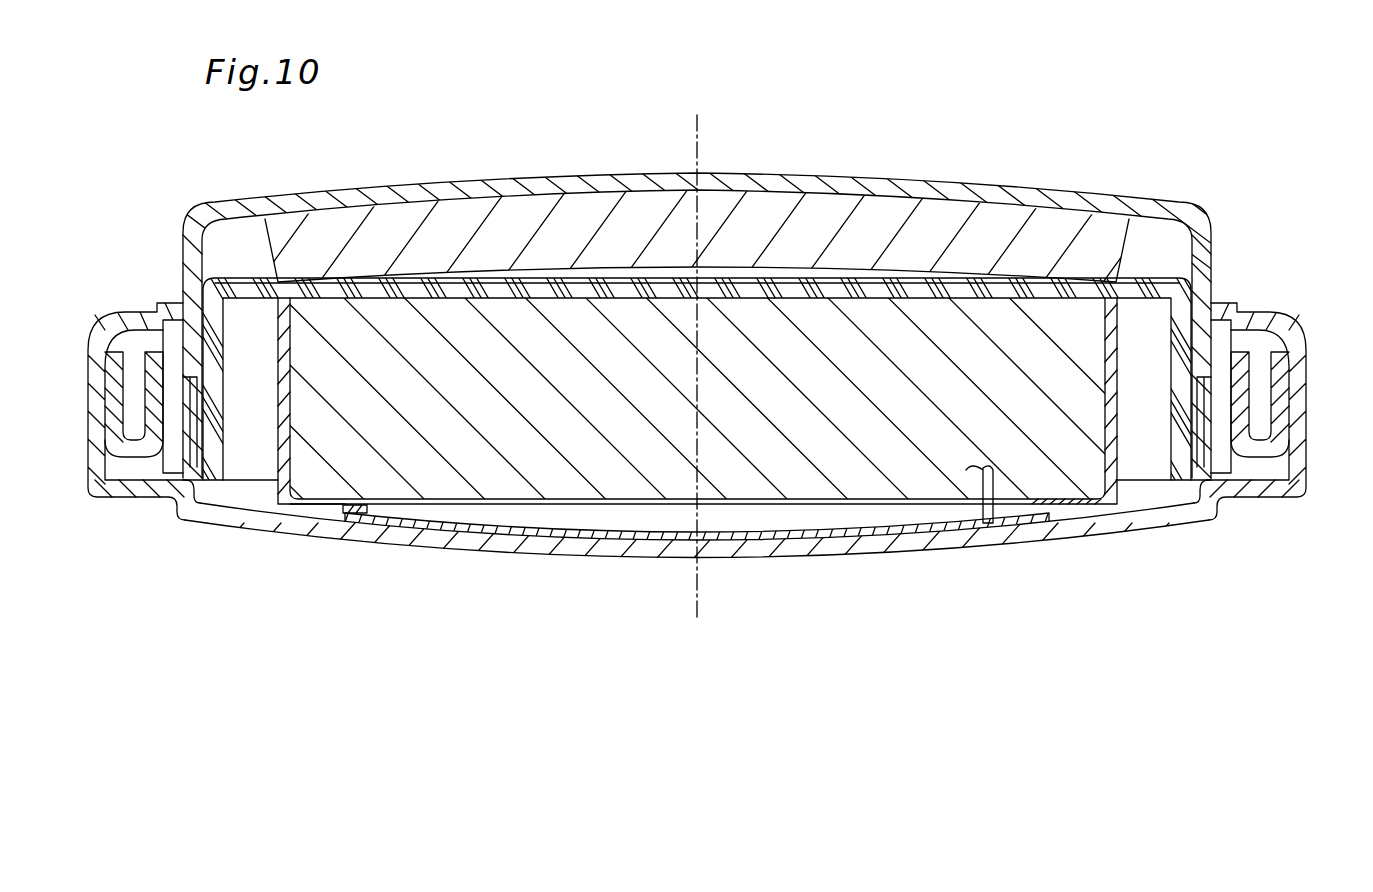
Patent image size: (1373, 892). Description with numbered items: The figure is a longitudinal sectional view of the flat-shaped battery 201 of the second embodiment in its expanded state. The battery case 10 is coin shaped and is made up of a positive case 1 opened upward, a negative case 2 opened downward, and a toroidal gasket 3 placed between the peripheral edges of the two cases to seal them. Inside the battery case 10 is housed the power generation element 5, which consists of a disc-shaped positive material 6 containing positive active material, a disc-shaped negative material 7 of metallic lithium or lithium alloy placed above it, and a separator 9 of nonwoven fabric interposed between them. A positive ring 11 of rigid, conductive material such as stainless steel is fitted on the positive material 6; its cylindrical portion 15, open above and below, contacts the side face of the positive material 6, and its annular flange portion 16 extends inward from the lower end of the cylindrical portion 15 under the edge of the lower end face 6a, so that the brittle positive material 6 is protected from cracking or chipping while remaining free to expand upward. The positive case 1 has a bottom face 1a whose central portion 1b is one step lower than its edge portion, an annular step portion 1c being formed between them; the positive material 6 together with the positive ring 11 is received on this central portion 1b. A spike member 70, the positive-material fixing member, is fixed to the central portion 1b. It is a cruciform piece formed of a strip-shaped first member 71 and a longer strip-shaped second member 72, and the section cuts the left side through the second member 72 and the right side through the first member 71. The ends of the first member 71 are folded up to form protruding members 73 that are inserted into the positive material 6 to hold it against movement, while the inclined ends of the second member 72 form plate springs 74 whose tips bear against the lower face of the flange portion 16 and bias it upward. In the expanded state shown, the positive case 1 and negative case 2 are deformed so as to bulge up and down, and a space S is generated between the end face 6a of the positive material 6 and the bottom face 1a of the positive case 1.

The positive case 1 is at (740, 562).
The bottom face 1a is at (128, 468).
The central portion 1b is at (368, 495).
The step portion 1c is at (185, 503).
The negative case 2 is at (742, 170).
The gasket 3 is at (1298, 405).
The power generation element 5 is at (235, 255).
The positive material 6 is at (1080, 360).
The end face 6a is at (1022, 505).
The negative material 7 is at (1100, 250).
The separator 9 is at (248, 300).
The battery case 10 is at (1224, 206).
The positive ring 11 is at (1120, 396).
The cylindrical portion 15 is at (275, 400).
The flange portion 16 is at (320, 505).
The spike member 70 is at (745, 523).
The first member 71 is at (855, 540).
The second member 72 is at (555, 536).
The protruding member 73 is at (985, 472).
The plate spring 74 is at (360, 513).
The flat-shaped battery 201 is at (1147, 172).
The space S is at (640, 522).